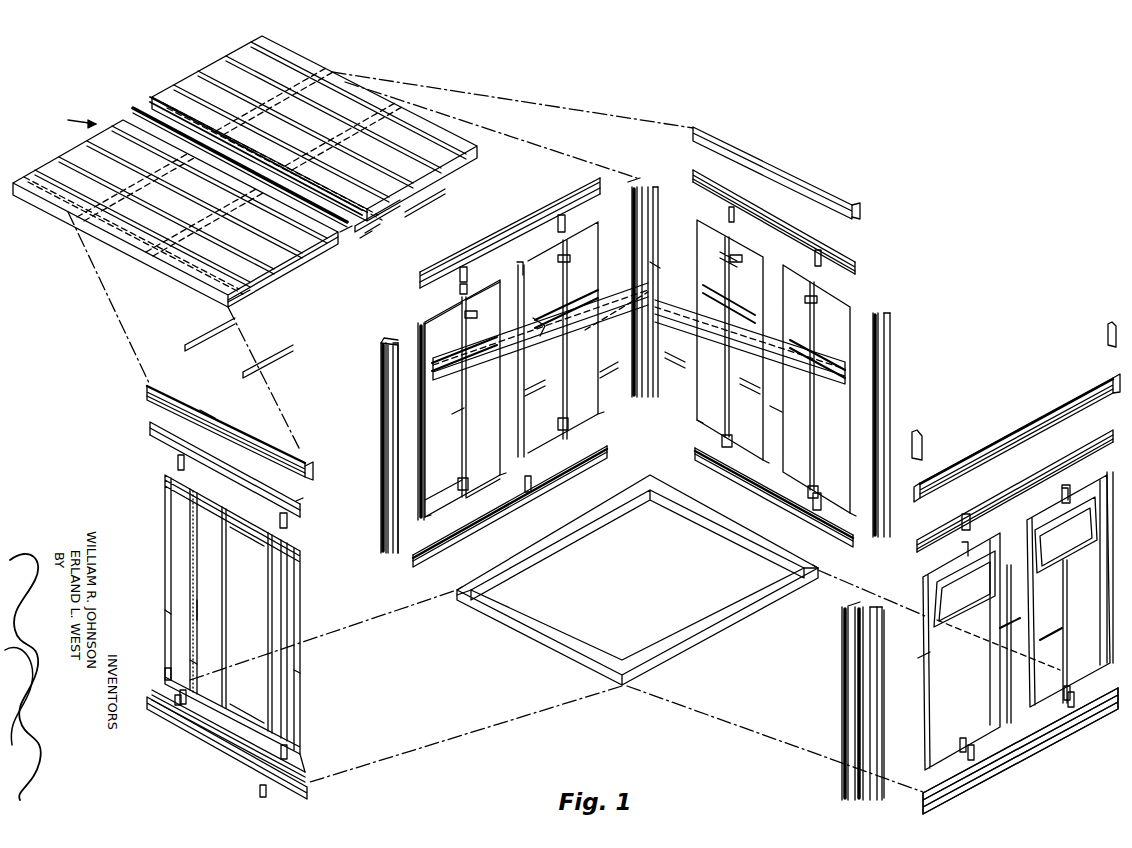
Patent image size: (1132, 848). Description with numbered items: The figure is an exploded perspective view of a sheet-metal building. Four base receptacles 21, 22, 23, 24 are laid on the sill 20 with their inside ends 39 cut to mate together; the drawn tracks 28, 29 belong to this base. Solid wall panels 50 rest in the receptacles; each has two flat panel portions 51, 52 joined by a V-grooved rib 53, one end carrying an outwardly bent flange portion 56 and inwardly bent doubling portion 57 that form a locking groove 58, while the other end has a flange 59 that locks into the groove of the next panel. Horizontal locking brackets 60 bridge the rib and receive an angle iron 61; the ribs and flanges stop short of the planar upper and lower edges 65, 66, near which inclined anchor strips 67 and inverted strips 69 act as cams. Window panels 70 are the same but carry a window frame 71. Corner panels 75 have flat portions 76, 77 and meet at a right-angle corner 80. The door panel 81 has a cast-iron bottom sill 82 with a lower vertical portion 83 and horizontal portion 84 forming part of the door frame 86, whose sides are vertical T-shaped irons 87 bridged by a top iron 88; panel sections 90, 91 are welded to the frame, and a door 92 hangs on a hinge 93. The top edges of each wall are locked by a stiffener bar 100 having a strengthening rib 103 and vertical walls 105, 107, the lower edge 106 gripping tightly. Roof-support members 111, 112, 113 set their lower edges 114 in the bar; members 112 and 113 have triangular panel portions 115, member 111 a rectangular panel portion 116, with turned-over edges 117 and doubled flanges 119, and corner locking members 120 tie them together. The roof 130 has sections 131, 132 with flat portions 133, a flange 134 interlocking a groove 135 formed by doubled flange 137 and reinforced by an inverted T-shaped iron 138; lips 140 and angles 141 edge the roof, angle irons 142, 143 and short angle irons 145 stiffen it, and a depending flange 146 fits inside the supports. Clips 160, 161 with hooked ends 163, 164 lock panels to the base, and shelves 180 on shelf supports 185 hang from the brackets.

The sill 20 is at (710, 650).
The base receptacle 21 is at (225, 764).
The base receptacle 22 is at (1010, 770).
The base receptacle 23 is at (492, 524).
The base receptacle 24 is at (765, 507).
The track rail 28 is at (222, 728).
The track flange 29 is at (256, 779).
The inside ends 39 is at (305, 790).
The solid wall panel 50 is at (429, 457).
The flat panel portion 51 is at (432, 345).
The flat panel portion 52 is at (472, 330).
The V-grooved rib 53 is at (461, 352).
The outwardly bent flange portion 56 is at (1100, 615).
The inwardly bent doubling portion 57 is at (297, 606).
The locking groove 58 is at (418, 381).
The flange 59 is at (394, 345).
The locking bracket 60 is at (530, 332).
The angle iron 61 is at (456, 418).
The upper edge 65 is at (516, 265).
The lower edge 66 is at (424, 522).
The inclined anchor strip 67 is at (467, 478).
The inclined strip 69 is at (477, 313).
The window panel 70 is at (1074, 589).
The window frame 71 is at (984, 592).
The corner panel 75 is at (380, 429).
The flat portion 76 is at (381, 371).
The flat portion 77 is at (382, 338).
The right-angle corner 80 is at (383, 446).
The door panel 81 is at (300, 584).
The bottom sill 82 is at (242, 738).
The lower vertical portion 83 is at (300, 742).
The horizontal portion 84 is at (265, 750).
The door frame 86 is at (196, 662).
The vertical T-shaped iron 87 is at (193, 592).
The top iron 88 is at (215, 495).
The panel section 90 is at (168, 628).
The panel section 91 is at (298, 673).
The door 92 is at (264, 620).
The hinge 93 is at (198, 608).
The stiffener bar 100 is at (508, 226).
The strengthening rib 103 is at (142, 430).
The vertical wall 105 is at (560, 192).
The lower edge 106 is at (415, 300).
The vertical wall 107 is at (412, 290).
The roof-support member 111 is at (1040, 422).
The roof-support member 112 is at (252, 432).
The roof-support member 113 is at (822, 181).
The lower edge 114 is at (244, 450).
The triangular panel portion 115 is at (283, 463).
The rectangular panel portion 116 is at (998, 446).
The turned-over edge 117 is at (300, 480).
The horizontal doubled flange 119 is at (972, 462).
The corner locking member 120 is at (1098, 326).
The roof 130 is at (64, 120).
The roof section 131 is at (315, 264).
The roof section 132 is at (392, 204).
The flat portion 133 is at (415, 193).
The vertical flange 134 is at (342, 232).
The vertical groove 135 is at (368, 237).
The doubled flange 137 is at (160, 100).
The inverted T-shaped iron 138 is at (140, 110).
The downwardly extending lip 140 is at (478, 148).
The sheet-metal angle 141 is at (376, 231).
The angle iron 142 is at (250, 118).
The angle iron 143 is at (280, 160).
The short angle iron 145 is at (225, 336).
The depending rectangular flange 146 is at (395, 144).
The clip 160 is at (178, 693).
The clip 161 is at (176, 460).
The hook-like upper end 163 is at (460, 268).
The hook-like lower end 164 is at (460, 290).
The shelf 180 is at (569, 348).
The shelf support 185 is at (522, 404).